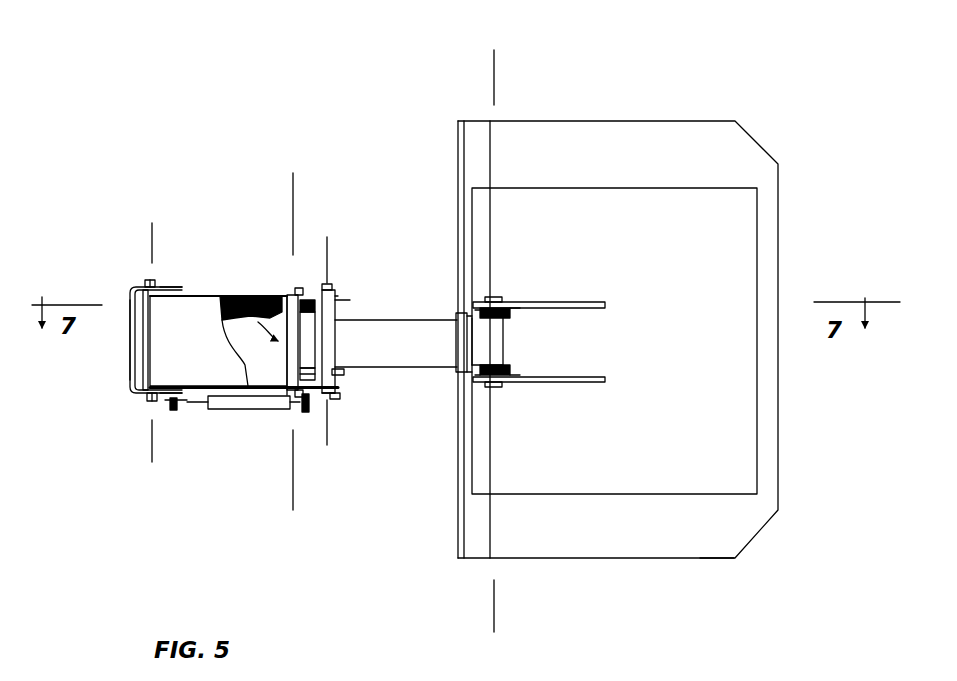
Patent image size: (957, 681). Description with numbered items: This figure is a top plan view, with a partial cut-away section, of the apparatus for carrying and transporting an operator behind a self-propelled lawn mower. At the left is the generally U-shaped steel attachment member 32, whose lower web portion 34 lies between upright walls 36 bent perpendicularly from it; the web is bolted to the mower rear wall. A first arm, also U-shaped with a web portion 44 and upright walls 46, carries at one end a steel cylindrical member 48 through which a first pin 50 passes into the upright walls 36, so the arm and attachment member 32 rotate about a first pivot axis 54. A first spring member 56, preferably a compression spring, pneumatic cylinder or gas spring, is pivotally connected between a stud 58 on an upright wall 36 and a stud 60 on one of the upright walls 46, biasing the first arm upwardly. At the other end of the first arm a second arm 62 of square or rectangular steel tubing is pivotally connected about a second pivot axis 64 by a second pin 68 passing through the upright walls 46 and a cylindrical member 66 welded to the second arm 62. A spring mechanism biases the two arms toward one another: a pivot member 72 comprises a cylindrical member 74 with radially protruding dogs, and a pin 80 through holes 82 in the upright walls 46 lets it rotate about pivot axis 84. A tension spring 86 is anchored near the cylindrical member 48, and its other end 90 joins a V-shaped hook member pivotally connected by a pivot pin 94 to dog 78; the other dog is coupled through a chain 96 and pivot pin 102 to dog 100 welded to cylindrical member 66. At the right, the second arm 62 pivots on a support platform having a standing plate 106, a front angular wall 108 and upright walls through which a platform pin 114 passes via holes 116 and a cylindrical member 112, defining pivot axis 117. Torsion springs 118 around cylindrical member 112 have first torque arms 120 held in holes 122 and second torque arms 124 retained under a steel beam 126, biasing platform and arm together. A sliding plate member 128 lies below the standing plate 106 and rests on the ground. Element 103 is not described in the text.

The attachment member 32 is at (128, 285).
The lower web portion 34 is at (135, 335).
The upright walls 36 is at (165, 284).
The web portion 44 is at (193, 317).
The upright walls 46 is at (283, 293).
The cylindrical member 48 is at (148, 365).
The first pin 50 is at (147, 280).
The first pivot axis 54 is at (148, 235).
The first spring member 56 is at (237, 400).
The stud 58 is at (175, 412).
The stud 60 is at (308, 408).
The second arm 62 is at (404, 335).
The second pivot axis 64 is at (328, 250).
The cylindrical member 66 is at (333, 355).
The second pin 68 is at (338, 297).
The pivot member 72 is at (248, 296).
The cylindrical member 74 is at (273, 388).
The dog 78 is at (333, 300).
The pin 80 is at (299, 291).
The holes 82 is at (302, 292).
The pivot axis 84 is at (293, 193).
The tension spring 86 is at (225, 294).
The other end 90 is at (286, 294).
The pivot pin 94 is at (340, 298).
The chain 96 is at (318, 392).
The dog 100 is at (325, 388).
The pivot pin 102 is at (338, 382).
The wall 103 is at (470, 565).
The standing plate 106 is at (734, 261).
The front angular wall 108 is at (488, 485).
The cylindrical member 112 is at (478, 380).
The platform pin 114 is at (490, 302).
The holes 116 is at (480, 306).
The pivot axis 117 is at (495, 72).
The torsion springs 118 is at (478, 311).
The first torque arm 120 is at (497, 298).
The holes 122 is at (520, 312).
The second torque arms 124 is at (476, 316).
The beam 126 is at (475, 342).
The sliding plate member 128 is at (701, 531).